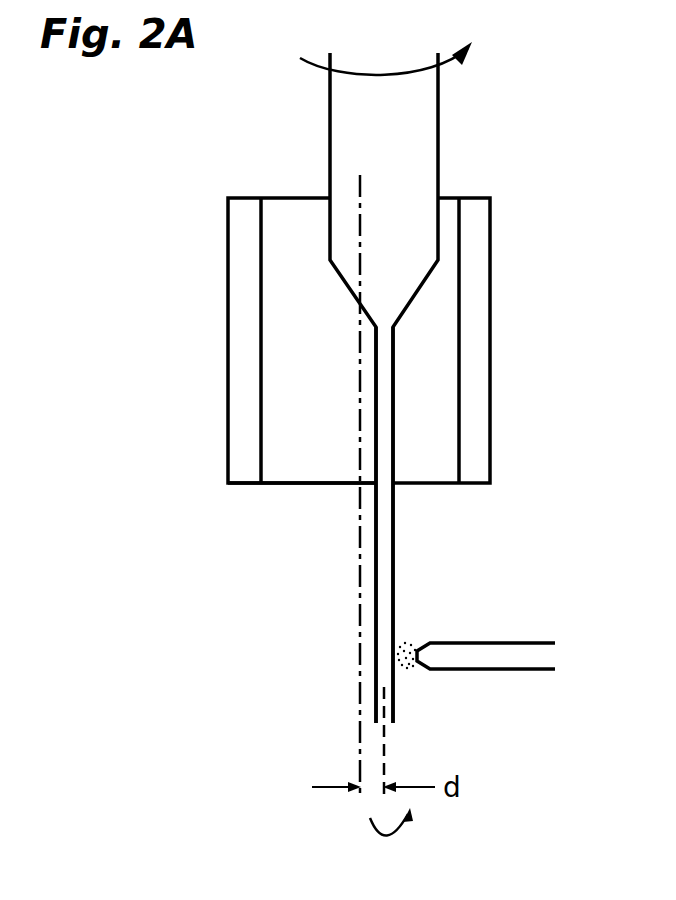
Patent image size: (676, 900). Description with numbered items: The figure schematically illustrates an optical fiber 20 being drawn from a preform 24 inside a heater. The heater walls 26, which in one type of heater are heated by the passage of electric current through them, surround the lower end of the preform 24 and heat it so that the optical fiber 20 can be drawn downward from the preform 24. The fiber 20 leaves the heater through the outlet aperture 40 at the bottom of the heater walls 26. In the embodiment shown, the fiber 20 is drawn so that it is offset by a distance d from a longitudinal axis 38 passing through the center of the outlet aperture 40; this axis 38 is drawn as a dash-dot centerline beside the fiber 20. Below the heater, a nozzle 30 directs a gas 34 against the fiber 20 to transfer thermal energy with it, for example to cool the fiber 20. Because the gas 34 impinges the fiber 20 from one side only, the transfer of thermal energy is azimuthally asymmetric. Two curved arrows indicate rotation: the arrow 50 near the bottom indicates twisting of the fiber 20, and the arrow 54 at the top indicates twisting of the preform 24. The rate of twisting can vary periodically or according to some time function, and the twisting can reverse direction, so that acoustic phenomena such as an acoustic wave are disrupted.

The optical fiber 20 is at (395, 539).
The preform 24 is at (428, 145).
The heater walls 26 is at (243, 457).
The nozzle 30 is at (480, 655).
The gas 34 is at (403, 650).
The axis of rotation 38 is at (360, 618).
The outlet aperture 40 is at (308, 484).
The twisting of the fiber 50 is at (390, 835).
The twisting of the preform 54 is at (312, 66).